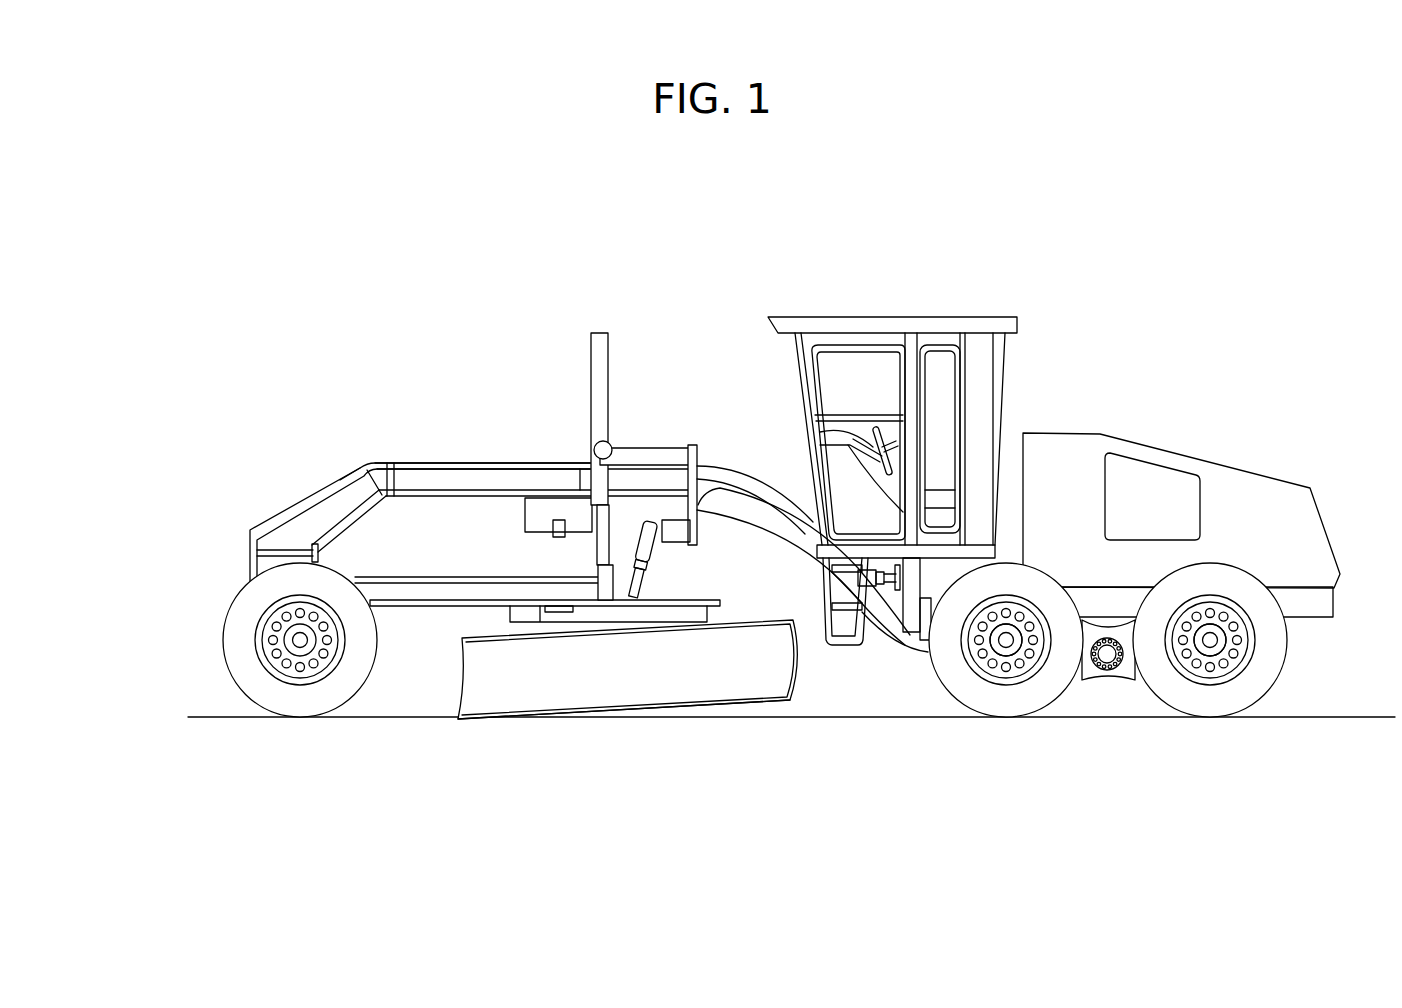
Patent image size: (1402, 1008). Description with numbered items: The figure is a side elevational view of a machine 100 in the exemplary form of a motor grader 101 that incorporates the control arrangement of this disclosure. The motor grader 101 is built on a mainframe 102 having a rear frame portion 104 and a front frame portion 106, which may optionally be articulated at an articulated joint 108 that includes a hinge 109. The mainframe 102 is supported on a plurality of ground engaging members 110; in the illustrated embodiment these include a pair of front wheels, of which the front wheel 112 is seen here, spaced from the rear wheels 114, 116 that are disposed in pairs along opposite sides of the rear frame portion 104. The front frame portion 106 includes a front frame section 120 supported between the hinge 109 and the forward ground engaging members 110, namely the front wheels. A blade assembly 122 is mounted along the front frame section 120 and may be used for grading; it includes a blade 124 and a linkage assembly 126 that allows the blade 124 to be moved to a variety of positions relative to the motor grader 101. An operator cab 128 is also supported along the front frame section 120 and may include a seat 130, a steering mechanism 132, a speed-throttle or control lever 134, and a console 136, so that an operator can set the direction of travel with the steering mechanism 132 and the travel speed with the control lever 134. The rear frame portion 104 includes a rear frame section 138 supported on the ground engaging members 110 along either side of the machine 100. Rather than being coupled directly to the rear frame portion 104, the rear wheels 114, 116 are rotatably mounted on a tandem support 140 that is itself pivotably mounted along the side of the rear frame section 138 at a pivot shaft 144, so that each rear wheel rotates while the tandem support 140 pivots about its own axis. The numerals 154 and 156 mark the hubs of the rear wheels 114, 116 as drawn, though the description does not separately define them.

The machine 100 is at (739, 253).
The motor grader 101 is at (830, 215).
The mainframe 102 is at (375, 489).
The rear frame portion 104 is at (1181, 628).
The front frame portion 106 is at (472, 462).
The articulated joint 108 is at (922, 652).
The hinge 109 is at (922, 655).
The ground engaging members 110 is at (282, 727).
The front wheel 112 is at (366, 684).
The rear wheel 114 is at (968, 674).
The rear wheel 116 is at (1219, 683).
The front frame section 120 is at (370, 455).
The blade assembly 122 is at (609, 722).
The blade 124 is at (590, 683).
The linkage assembly 126 is at (635, 447).
The operator cab 128 is at (888, 317).
The seat 130 is at (898, 429).
The steering mechanism 132 is at (820, 432).
The control lever 134 is at (892, 441).
The console 136 is at (848, 498).
The rear frame section 138 is at (1322, 622).
The tandem support 140 is at (1100, 721).
The pivot shaft 144 is at (1113, 664).
The rear axle hub 154 is at (1007, 642).
The rear axle hub 156 is at (1210, 645).